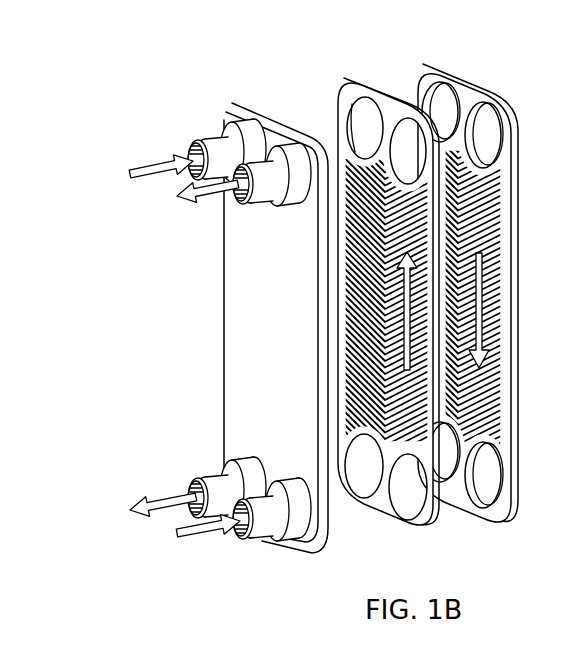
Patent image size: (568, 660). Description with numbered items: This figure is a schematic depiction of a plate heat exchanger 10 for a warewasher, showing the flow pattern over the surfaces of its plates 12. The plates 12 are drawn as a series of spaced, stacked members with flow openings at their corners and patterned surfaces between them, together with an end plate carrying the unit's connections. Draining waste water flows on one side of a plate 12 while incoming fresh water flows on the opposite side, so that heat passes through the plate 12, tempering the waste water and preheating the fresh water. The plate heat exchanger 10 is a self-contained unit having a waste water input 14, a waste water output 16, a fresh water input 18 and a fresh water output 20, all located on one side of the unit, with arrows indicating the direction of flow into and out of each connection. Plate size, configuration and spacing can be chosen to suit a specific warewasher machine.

The plate heat exchanger 10 is at (112, 264).
The plate 12 is at (362, 84).
The waste water input 14 is at (205, 136).
The waste water output 16 is at (205, 473).
The fresh water input 18 is at (259, 540).
The fresh water output 20 is at (266, 208).